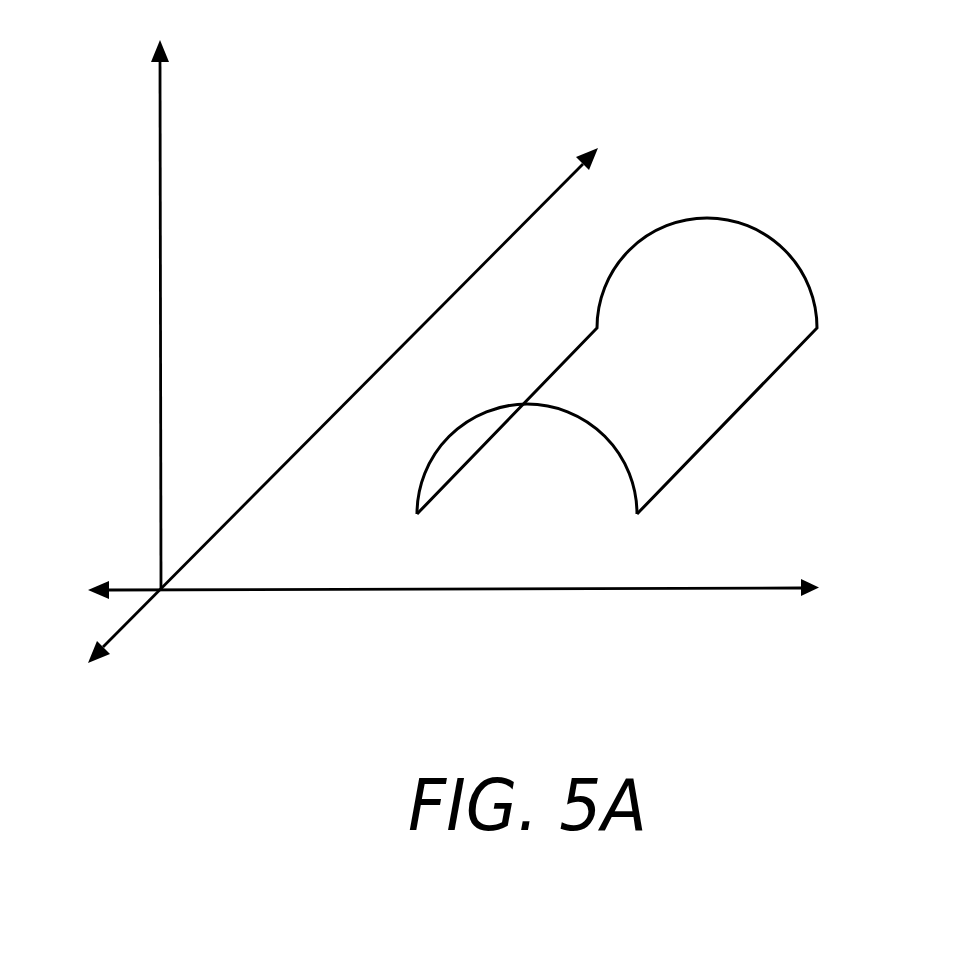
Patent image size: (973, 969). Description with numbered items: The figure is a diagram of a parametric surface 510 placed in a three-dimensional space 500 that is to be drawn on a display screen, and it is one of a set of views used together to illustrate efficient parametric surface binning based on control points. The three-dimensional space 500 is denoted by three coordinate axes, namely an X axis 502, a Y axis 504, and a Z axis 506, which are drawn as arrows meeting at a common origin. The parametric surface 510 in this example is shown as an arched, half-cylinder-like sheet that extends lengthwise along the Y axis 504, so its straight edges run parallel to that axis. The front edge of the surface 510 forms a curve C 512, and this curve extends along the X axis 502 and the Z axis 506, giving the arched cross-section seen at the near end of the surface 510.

The 3D space 500 is at (831, 206).
The X axis 502 is at (453, 618).
The Y axis 504 is at (343, 377).
The Z axis 506 is at (137, 315).
The parametric surface 510 is at (653, 368).
The curve C 512 is at (585, 423).